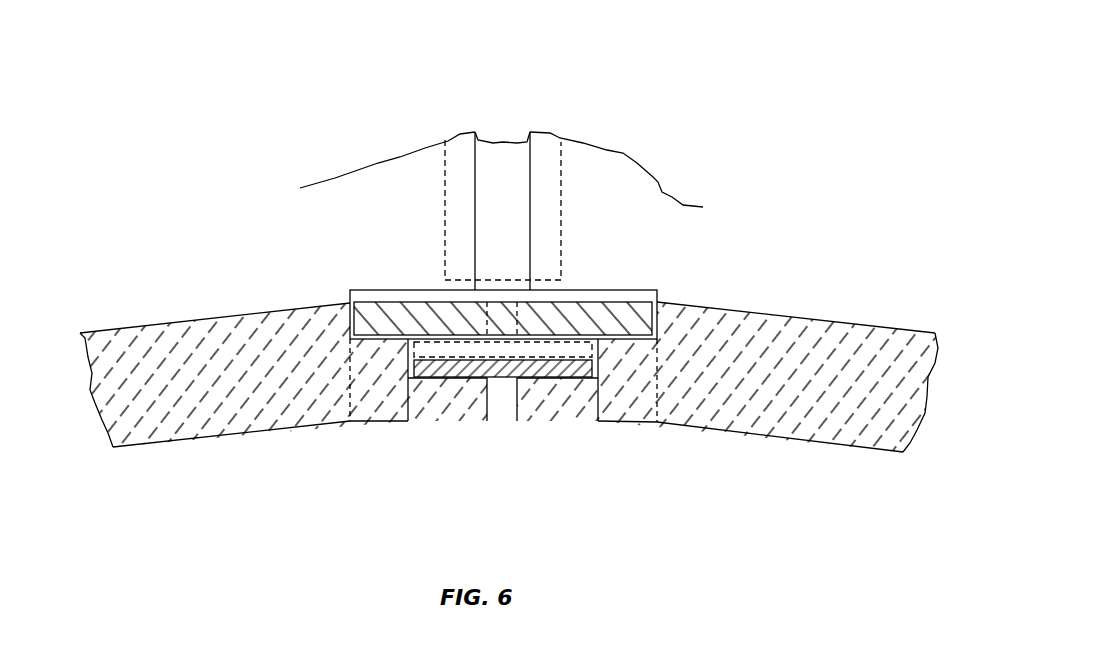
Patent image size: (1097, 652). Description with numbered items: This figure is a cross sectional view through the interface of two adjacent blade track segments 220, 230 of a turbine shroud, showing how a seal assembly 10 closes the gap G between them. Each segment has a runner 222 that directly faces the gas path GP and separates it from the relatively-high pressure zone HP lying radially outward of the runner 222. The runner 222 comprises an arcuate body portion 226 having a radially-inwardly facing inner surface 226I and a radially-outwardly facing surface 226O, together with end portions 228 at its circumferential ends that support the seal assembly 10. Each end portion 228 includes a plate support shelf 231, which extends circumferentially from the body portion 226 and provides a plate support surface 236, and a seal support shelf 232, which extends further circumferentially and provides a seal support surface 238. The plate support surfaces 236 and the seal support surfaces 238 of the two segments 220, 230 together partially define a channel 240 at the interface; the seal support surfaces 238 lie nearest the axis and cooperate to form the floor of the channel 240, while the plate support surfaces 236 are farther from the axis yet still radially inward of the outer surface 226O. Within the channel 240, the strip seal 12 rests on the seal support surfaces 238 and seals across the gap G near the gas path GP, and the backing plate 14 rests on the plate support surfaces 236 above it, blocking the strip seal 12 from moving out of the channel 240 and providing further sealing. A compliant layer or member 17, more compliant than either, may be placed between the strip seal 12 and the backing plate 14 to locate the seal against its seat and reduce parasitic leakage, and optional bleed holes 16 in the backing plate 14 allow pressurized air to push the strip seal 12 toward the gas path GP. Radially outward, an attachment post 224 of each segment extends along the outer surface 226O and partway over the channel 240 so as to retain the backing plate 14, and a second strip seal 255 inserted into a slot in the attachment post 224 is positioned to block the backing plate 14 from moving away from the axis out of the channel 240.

The blade track segment 220 is at (515, 295).
The runner 222 is at (527, 360).
The attachment post 224 is at (371, 190).
The body portion 226 is at (177, 435).
The radially-outwardly facing surface 226O is at (278, 306).
The radially-inwardly facing inner surface 226I is at (247, 433).
The end portions 228 is at (494, 458).
The blade track segment 230 is at (902, 323).
The plate support shelf 231 is at (385, 427).
The seal support shelf 232 is at (450, 427).
The plate support surface 236 is at (382, 335).
The seal support surface 238 is at (455, 385).
The channel 240 is at (543, 248).
The second strip seal 255 is at (500, 165).
The seal assembly 10 is at (537, 289).
The strip seal 12 is at (547, 356).
The backing plate 14 is at (417, 301).
The bleed holes 16 is at (500, 318).
The compliant layer or member 17 is at (535, 298).
The gap G is at (502, 402).
The gas path GP is at (590, 489).
The relatively-high pressure zone HP is at (838, 143).